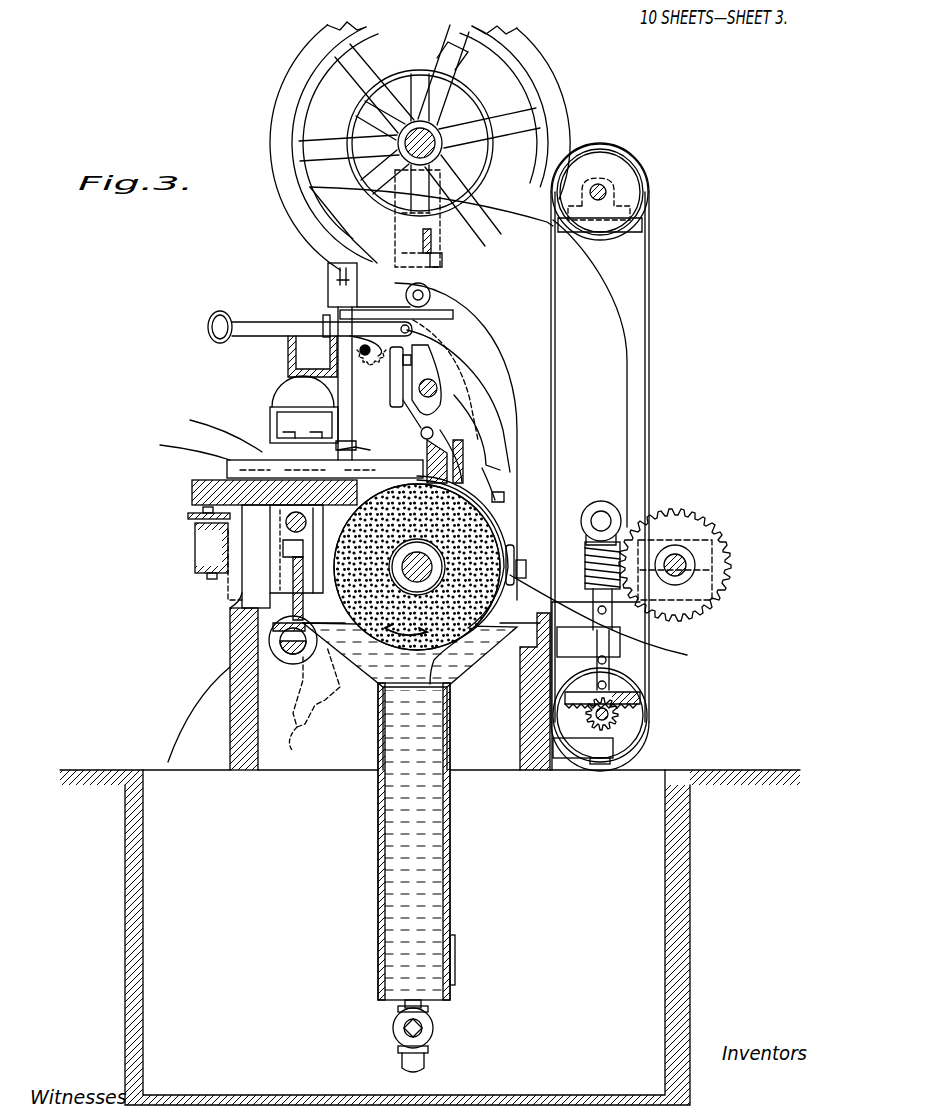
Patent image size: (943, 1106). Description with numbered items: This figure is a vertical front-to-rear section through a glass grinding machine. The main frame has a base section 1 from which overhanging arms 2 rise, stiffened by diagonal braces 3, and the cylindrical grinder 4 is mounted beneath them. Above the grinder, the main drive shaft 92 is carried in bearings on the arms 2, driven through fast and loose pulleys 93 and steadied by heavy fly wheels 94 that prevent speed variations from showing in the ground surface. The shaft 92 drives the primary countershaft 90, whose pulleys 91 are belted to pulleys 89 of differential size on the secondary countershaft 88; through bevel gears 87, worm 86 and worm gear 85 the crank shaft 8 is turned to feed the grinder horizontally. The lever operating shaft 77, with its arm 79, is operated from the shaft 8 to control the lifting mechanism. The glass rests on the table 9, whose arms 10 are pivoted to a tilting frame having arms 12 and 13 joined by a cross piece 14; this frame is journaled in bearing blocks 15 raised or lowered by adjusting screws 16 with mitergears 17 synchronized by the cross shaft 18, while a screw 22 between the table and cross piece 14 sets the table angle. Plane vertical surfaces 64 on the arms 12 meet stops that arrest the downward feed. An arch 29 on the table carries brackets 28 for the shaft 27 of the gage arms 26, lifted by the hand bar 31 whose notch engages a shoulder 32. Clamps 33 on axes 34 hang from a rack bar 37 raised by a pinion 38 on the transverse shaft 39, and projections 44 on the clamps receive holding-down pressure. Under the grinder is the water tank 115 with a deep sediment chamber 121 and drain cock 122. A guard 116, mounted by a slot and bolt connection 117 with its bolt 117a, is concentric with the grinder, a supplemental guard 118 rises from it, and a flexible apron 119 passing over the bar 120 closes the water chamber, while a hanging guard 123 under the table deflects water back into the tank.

The base section 1 is at (230, 675).
The overhanging arms 2 is at (468, 348).
The braces 3 is at (452, 316).
The grinder 4 is at (455, 540).
The crank shaft 8 is at (682, 576).
The table 9 is at (200, 484).
The arms 10 is at (277, 416).
The arms 12 is at (330, 687).
The arms 13 is at (235, 575).
The cross piece 14 is at (184, 540).
The bearing blocks 15 is at (192, 526).
The adjusting screws 16 is at (248, 602).
The mitergears 17 is at (200, 660).
The cross shaft 18 is at (292, 665).
The screw 22 is at (207, 577).
The gage arms 26 is at (495, 420).
The shaft 27 is at (462, 395).
The brackets 28 is at (421, 433).
The arch 29 is at (282, 382).
The hand bar 31 is at (250, 325).
The shoulder 32 is at (340, 316).
The clamps 33 is at (230, 462).
The axes 34 is at (216, 426).
The rack bar 37 is at (370, 372).
The pinion 38 is at (290, 354).
The transverse shaft 39 is at (350, 336).
The projections 44 is at (366, 452).
The plane vertical surfaces 64 is at (306, 741).
The lever operating shaft 77 is at (601, 512).
The arm 79 is at (612, 530).
The worm gear 85 is at (700, 527).
The worm 86 is at (585, 563).
The bevel gears 87 is at (620, 708).
The secondary countershaft 88 is at (616, 722).
The pulleys 89 is at (620, 766).
The primary countershaft 90 is at (608, 190).
The pulleys 91 is at (603, 238).
The main drive shaft 92 is at (403, 143).
The fast and loose pulleys 93 is at (466, 94).
The fly wheels 94 is at (556, 112).
The water tank 115 is at (520, 650).
The guard 116 is at (460, 683).
The slot and bolt connection 117 is at (518, 560).
The bolt 117a is at (623, 621).
The supplemental guard 118 is at (498, 470).
The flexible apron 119 is at (456, 435).
The bar 120 is at (435, 382).
The sediment chamber 121 is at (450, 895).
The drain cock 122 is at (432, 1028).
The hanging guard 123 is at (174, 441).